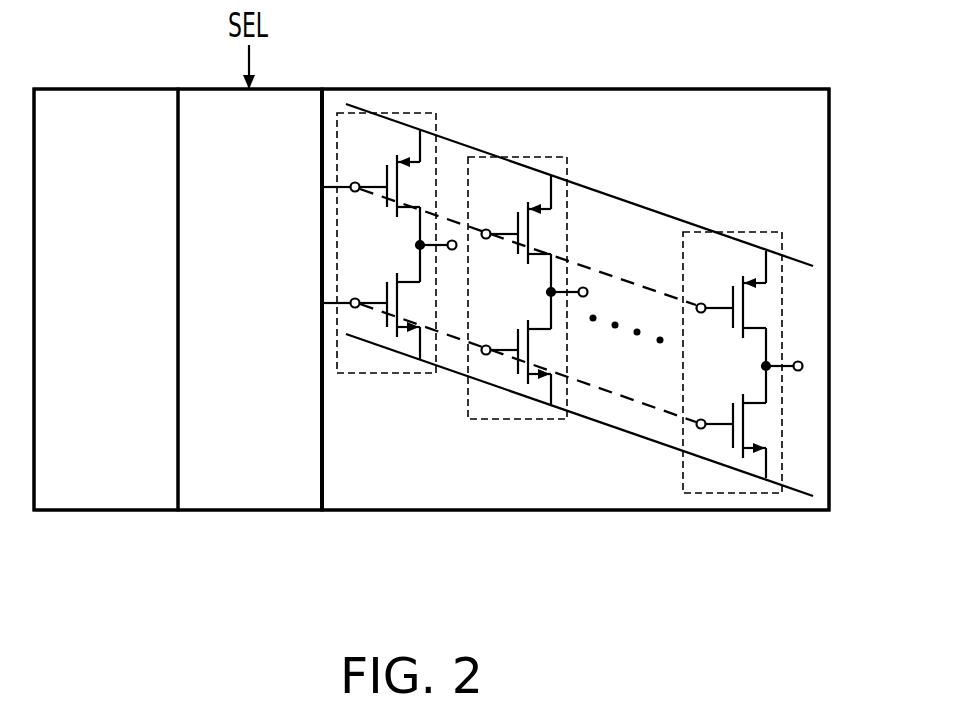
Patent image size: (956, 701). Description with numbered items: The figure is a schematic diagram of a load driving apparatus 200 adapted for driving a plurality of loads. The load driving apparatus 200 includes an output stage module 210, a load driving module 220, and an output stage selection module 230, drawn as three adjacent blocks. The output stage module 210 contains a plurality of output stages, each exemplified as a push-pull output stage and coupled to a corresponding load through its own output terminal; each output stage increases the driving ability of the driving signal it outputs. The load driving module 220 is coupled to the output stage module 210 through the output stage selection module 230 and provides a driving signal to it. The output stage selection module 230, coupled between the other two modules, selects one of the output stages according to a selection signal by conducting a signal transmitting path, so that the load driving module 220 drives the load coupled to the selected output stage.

The load driving apparatus 200 is at (873, 615).
The output stage module 210 is at (575, 335).
The load driving module 220 is at (100, 513).
The output stage selection module 230 is at (245, 513).